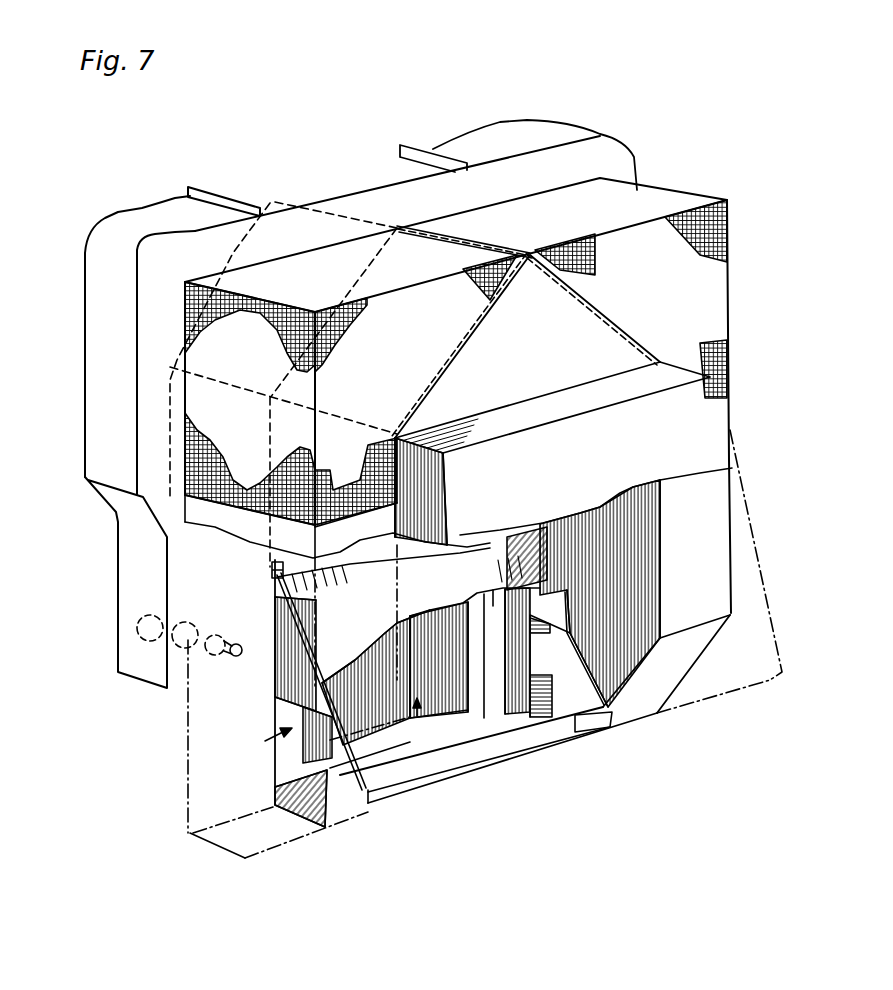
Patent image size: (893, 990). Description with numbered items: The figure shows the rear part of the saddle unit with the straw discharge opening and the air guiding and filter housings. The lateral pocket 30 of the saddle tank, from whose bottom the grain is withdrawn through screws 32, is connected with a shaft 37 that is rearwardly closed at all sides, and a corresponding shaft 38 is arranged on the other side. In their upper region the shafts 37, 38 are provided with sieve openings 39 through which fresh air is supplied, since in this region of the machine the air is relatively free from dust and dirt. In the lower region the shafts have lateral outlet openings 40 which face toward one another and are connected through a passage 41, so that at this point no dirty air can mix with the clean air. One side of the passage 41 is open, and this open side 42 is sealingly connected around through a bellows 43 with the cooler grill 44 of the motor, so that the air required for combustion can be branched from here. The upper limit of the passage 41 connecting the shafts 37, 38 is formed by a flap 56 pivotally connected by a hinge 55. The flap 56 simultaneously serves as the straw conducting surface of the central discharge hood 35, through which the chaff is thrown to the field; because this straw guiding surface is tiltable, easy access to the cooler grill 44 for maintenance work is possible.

The lateral pocket 30 is at (130, 533).
The screws 32 is at (160, 633).
The discharge hood 35 is at (702, 450).
The shaft 37 is at (215, 750).
The shaft 38 is at (713, 543).
The sieve openings 39 is at (185, 282).
The lateral outlet openings 40 is at (294, 727).
The passage 41 is at (443, 770).
The open side 42 is at (450, 720).
The bellows 43 is at (493, 603).
The cooler grill 44 is at (407, 692).
The hinge 55 is at (272, 565).
The flap 56 is at (300, 655).